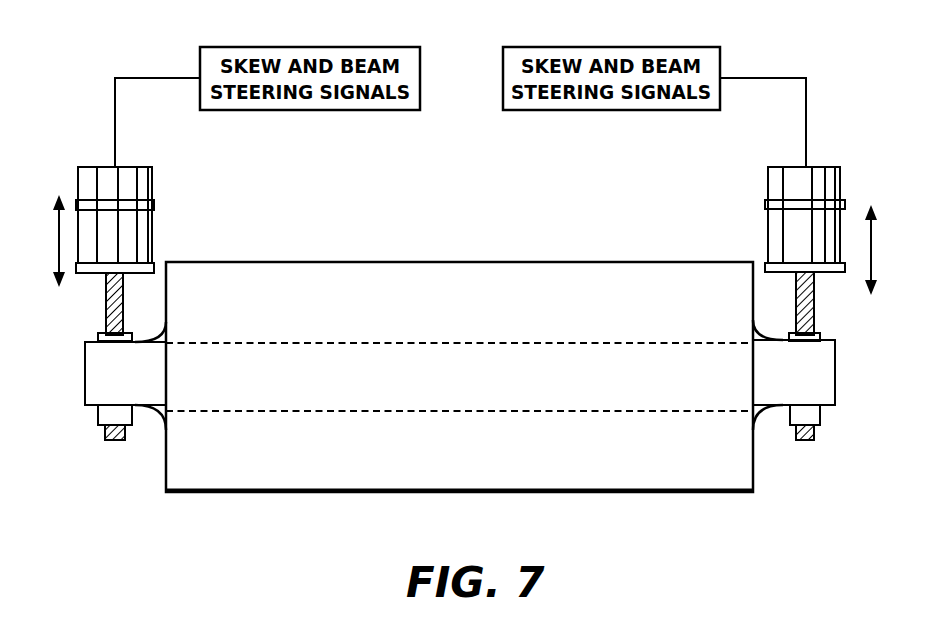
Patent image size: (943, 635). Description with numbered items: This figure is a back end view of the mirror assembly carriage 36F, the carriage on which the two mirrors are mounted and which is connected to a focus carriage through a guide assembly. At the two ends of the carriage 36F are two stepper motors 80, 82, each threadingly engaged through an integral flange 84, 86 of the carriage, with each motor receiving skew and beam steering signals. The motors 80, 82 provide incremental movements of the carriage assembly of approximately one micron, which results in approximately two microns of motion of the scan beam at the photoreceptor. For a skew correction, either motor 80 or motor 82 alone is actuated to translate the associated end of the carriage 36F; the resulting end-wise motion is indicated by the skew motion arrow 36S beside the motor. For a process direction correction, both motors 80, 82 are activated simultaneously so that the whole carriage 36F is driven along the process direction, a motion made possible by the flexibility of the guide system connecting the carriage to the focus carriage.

The mirror carriage assembly 36F is at (460, 262).
The skew adjustment motion 36S is at (57, 240).
The stepper motor 80 is at (97, 165).
The stepper motor 82 is at (820, 165).
The integral flange 84 is at (85, 370).
The integral flange 86 is at (835, 368).